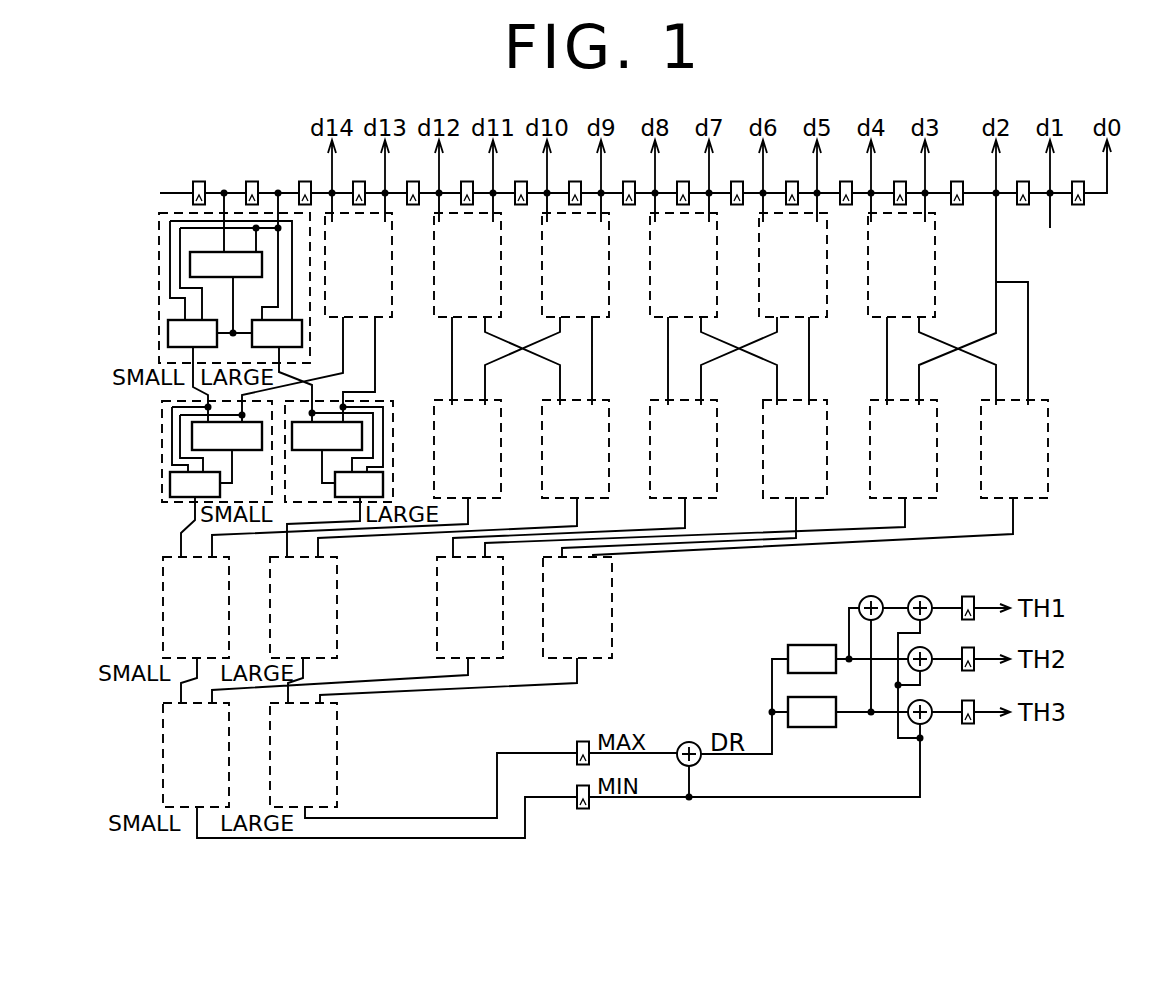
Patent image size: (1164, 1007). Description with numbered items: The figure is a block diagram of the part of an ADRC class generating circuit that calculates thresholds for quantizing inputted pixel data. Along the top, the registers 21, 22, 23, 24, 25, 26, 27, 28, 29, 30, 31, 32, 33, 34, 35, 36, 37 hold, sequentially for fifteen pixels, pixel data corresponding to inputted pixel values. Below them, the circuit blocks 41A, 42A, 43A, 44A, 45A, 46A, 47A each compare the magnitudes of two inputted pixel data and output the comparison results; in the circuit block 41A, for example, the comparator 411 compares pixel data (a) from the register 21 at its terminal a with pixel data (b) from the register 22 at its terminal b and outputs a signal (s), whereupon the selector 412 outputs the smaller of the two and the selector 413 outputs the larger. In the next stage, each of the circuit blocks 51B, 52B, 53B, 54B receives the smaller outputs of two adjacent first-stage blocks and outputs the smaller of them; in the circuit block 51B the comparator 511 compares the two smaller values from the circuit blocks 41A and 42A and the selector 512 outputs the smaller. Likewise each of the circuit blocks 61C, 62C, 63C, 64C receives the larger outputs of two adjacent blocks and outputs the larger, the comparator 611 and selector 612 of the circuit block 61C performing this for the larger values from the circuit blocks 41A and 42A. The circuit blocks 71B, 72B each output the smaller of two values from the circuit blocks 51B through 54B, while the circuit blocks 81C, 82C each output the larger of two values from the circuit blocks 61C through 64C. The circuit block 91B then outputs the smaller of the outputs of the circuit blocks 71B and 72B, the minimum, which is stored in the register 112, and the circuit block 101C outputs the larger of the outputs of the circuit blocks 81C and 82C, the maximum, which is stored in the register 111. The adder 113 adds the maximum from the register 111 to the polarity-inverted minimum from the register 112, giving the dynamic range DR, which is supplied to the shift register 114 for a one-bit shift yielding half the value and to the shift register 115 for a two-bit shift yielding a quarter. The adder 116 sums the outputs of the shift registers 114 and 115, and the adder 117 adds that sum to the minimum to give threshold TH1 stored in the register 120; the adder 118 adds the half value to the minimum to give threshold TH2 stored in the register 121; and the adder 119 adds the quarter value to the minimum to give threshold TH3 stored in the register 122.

The register 21 is at (199, 182).
The register 22 is at (252, 182).
The register 23 is at (305, 182).
The register 24 is at (359, 182).
The register 25 is at (413, 182).
The register 26 is at (467, 182).
The register 27 is at (521, 182).
The register 28 is at (575, 182).
The register 29 is at (629, 182).
The register 30 is at (683, 182).
The register 31 is at (737, 182).
The register 32 is at (792, 182).
The register 33 is at (846, 182).
The register 34 is at (900, 182).
The register 35 is at (957, 182).
The register 36 is at (1023, 182).
The register 37 is at (1078, 182).
The circuit block 41A is at (262, 280).
The comparator 411 is at (190, 252).
The selector 412 is at (168, 336).
The selector 413 is at (302, 333).
The circuit block 42A is at (358, 265).
The circuit block 43A is at (467, 265).
The circuit block 44A is at (575, 265).
The circuit block 45A is at (683, 265).
The circuit block 46A is at (793, 265).
The circuit block 47A is at (901, 265).
The circuit block 51B is at (184, 460).
The comparator 511 is at (192, 426).
The selector 512 is at (170, 494).
The circuit block 52B is at (467, 449).
The circuit block 53B is at (683, 449).
The circuit block 54B is at (903, 449).
The circuit block 61C is at (364, 469).
The comparator 611 is at (362, 440).
The selector 612 is at (346, 498).
The circuit block 62C is at (575, 449).
The circuit block 63C is at (795, 449).
The circuit block 64C is at (1014, 449).
The circuit block 71B is at (196, 607).
The circuit block 72B is at (470, 607).
The circuit block 81C is at (303, 607).
The circuit block 82C is at (577, 607).
The circuit block 91B is at (196, 755).
The circuit block 101C is at (303, 755).
The register 111 is at (583, 742).
The register 112 is at (583, 809).
The adder 113 is at (689, 742).
The shift register 114 is at (808, 645).
The shift register 115 is at (813, 727).
The adder 116 is at (871, 596).
The adder 117 is at (920, 596).
The adder 118 is at (929, 651).
The adder 119 is at (929, 704).
The register 120 is at (968, 596).
The register 121 is at (974, 656).
The register 122 is at (974, 708).